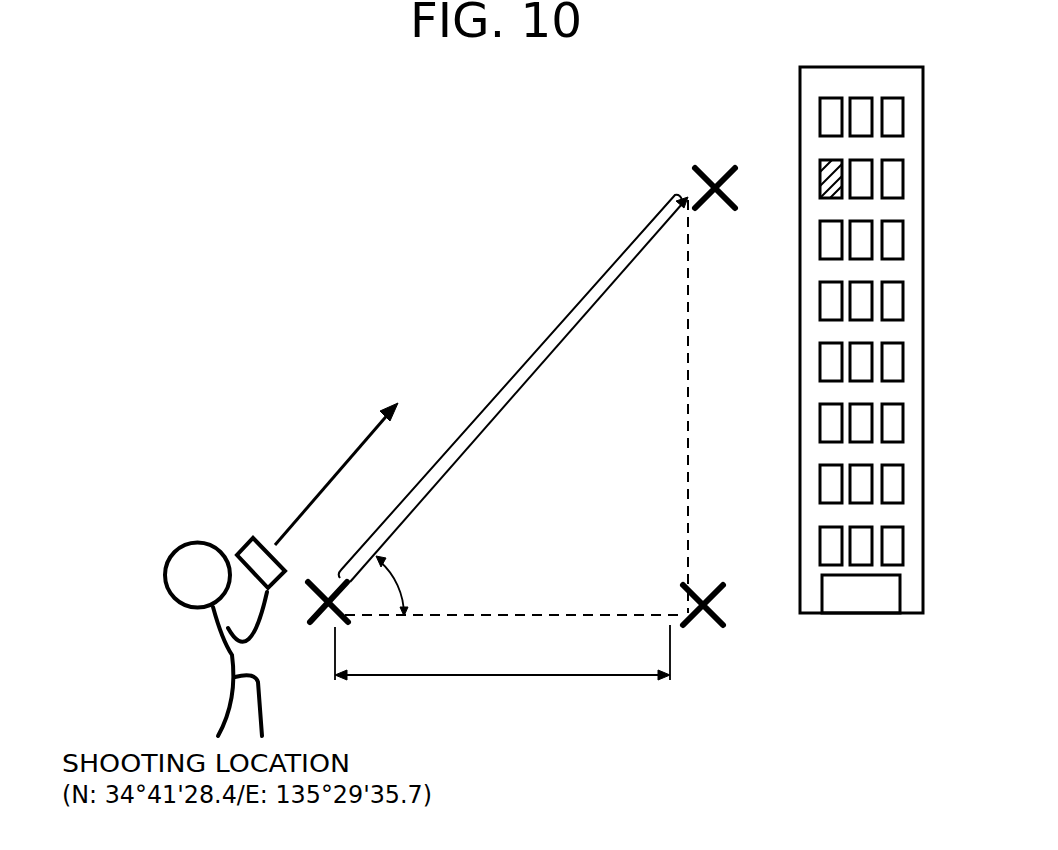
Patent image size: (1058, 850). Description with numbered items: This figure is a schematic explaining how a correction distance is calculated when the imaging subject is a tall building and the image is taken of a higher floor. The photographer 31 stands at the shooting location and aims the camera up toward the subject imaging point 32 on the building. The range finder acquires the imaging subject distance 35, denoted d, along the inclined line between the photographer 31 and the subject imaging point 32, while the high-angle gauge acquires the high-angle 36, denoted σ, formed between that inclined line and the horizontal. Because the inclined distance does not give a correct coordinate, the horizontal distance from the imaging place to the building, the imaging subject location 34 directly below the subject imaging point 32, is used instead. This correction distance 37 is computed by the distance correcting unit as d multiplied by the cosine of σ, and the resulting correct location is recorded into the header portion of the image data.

The photographer 31 is at (180, 545).
The subject imaging point 32 is at (700, 170).
The imaging subject location 34 is at (717, 608).
The imaging subject distance 35 is at (523, 357).
The high-angle 36 is at (402, 578).
The correction distance 37 is at (597, 676).